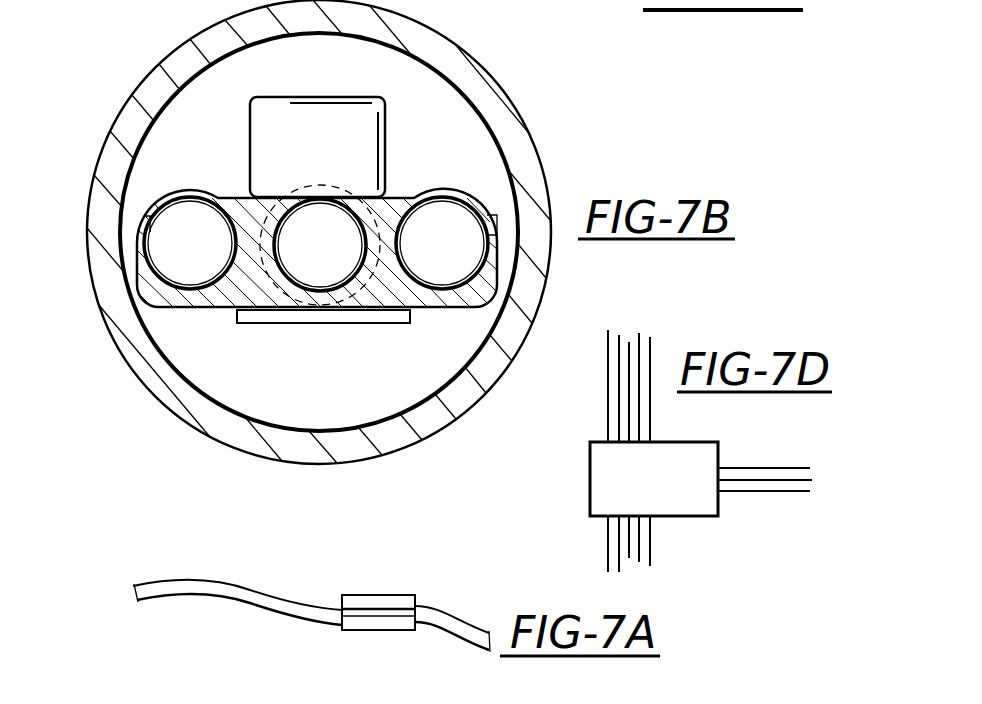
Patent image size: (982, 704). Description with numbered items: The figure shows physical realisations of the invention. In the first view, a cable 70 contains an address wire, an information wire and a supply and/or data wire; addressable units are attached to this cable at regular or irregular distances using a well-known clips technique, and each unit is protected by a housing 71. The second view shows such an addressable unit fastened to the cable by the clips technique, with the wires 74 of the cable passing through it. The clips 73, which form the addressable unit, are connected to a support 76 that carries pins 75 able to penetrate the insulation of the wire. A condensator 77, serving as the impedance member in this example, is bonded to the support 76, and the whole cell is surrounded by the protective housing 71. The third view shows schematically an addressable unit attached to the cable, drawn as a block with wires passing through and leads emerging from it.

In FIG. 7A, the cable 70 is at (256, 603).
In FIG. 7A, the housing 71 is at (421, 593).
In FIG. 7B, the clips 73 is at (318, 327).
In FIG. 7B, the outer tubes 74 is at (165, 196).
In FIG. 7B, the pins 75 is at (393, 194).
In FIG. 7B, the support 76 is at (186, 312).
In FIG. 7B, the condensator 77 is at (330, 152).